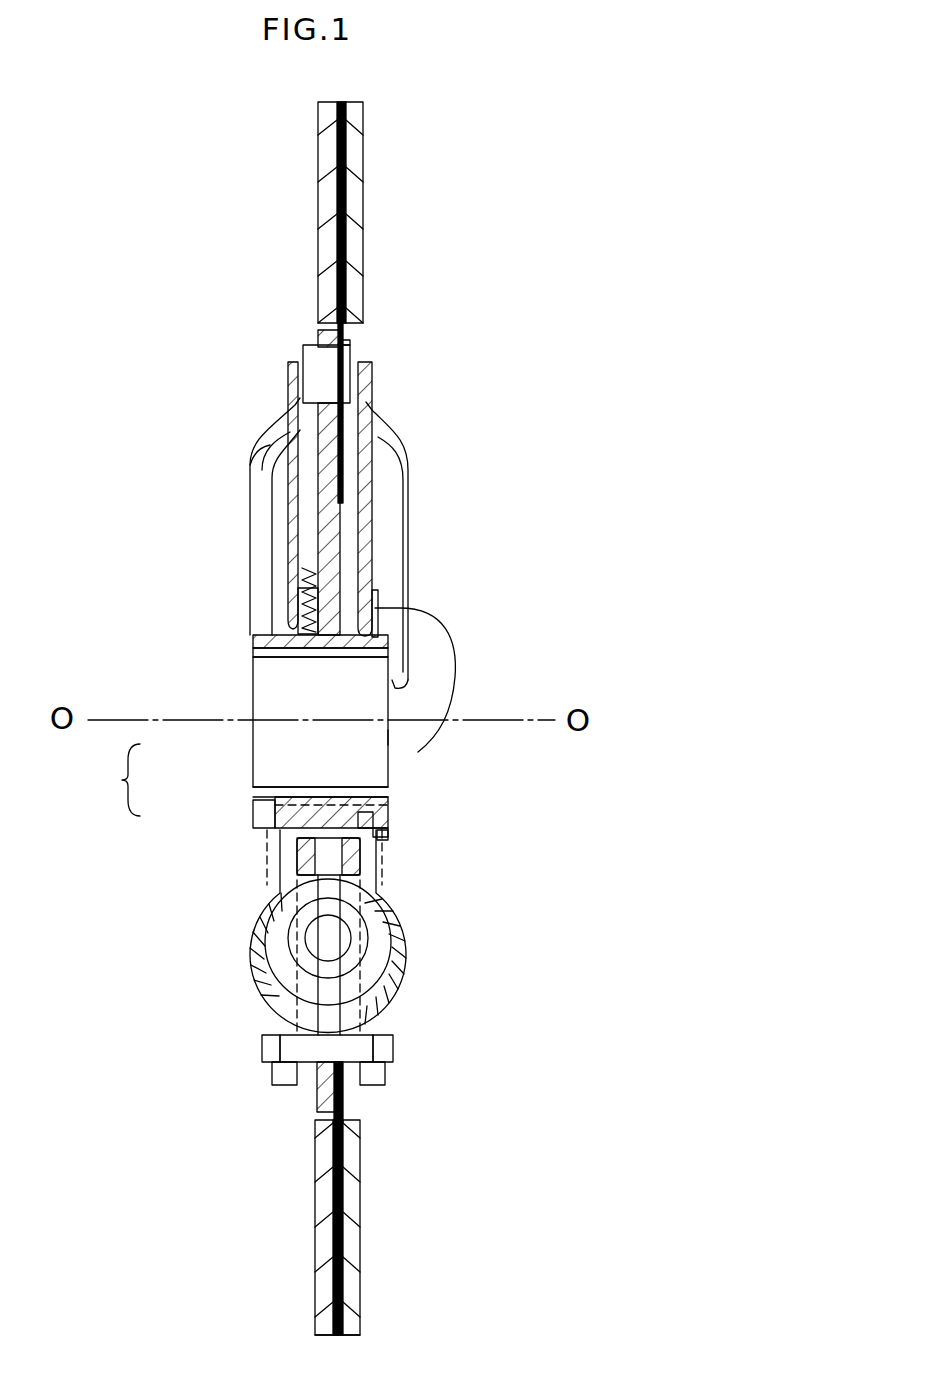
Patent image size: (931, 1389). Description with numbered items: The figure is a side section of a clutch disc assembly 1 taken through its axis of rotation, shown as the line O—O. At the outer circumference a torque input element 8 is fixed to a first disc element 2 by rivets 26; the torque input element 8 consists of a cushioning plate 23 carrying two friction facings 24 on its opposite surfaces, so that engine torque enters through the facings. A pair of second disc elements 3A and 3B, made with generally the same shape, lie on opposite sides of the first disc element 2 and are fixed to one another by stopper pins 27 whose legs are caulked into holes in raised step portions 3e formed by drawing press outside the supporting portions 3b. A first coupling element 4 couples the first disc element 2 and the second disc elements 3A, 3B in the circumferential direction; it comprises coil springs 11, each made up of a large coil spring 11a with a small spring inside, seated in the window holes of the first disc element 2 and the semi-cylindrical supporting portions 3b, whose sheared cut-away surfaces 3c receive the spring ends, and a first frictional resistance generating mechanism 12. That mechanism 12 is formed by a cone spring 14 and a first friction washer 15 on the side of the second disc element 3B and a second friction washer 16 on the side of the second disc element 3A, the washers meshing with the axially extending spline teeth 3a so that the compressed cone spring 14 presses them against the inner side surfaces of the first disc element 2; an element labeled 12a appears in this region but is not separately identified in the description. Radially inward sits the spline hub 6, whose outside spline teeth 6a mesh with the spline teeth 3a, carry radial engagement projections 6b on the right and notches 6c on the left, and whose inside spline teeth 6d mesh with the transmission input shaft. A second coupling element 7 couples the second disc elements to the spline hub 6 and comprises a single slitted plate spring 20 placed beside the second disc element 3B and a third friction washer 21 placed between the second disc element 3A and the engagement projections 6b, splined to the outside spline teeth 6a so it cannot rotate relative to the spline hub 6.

The clutch disc assembly 1 is at (556, 306).
The first disc element 2 is at (340, 461).
The second disc element 3A is at (412, 486).
The second disc element 3B is at (250, 506).
The spline teeth 3a is at (283, 650).
The supporting portions 3b is at (250, 955).
The cut-away surfaces 3c is at (250, 977).
The step portions 3e is at (275, 1072).
The first coupling element 4 is at (372, 870).
The spline hub 6 is at (394, 787).
The outside spline teeth 6a is at (372, 817).
The engagement projections 6b is at (388, 833).
The notches 6c is at (390, 738).
The inside spline teeth 6d is at (327, 657).
The second coupling element 7 is at (117, 780).
The torque input element 8 is at (387, 1258).
The coil springs 11 is at (395, 902).
The large coil spring 11a is at (368, 928).
The first frictional resistance generating mechanism 12 is at (350, 560).
The ball 12a is at (273, 913).
The cone spring 14 is at (314, 600).
The first friction washer 15 is at (316, 566).
The second friction washer 16 is at (373, 577).
The spring 20 is at (270, 843).
The third friction washer 21 is at (390, 737).
The cushioning plate 23 is at (347, 1108).
The friction facings 24 is at (320, 1197).
The rivets 26 is at (305, 358).
The stopper pins 27 is at (258, 1008).